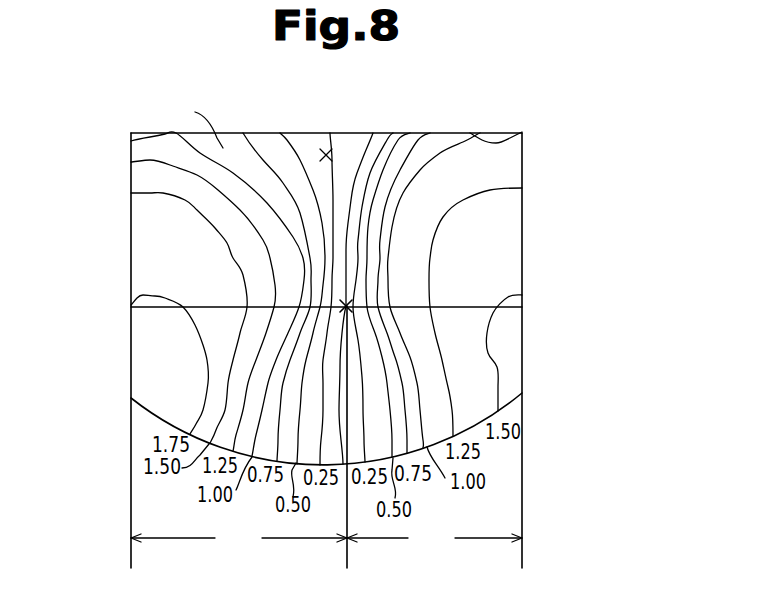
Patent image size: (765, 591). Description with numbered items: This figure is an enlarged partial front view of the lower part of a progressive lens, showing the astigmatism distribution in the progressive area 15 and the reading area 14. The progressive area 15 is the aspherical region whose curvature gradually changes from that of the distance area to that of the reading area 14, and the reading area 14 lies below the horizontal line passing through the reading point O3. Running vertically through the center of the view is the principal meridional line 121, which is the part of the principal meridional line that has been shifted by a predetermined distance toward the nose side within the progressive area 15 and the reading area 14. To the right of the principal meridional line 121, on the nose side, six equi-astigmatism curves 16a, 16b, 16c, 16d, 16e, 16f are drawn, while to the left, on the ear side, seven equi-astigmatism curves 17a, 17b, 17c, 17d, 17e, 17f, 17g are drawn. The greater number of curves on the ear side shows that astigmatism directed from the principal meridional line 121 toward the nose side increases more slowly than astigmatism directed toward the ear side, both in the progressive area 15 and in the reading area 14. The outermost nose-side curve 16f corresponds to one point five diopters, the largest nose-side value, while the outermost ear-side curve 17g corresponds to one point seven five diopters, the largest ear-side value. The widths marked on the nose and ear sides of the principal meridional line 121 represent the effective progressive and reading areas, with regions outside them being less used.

The reading area 14 is at (553, 364).
The progressive area 15 is at (553, 229).
The equi-astigmatism curve 16a is at (360, 148).
The equi-astigmatism curve 16b is at (391, 145).
The equi-astigmatism curve 16c is at (430, 150).
The equi-astigmatism curve 16d is at (520, 133).
The equi-astigmatism curve 16e is at (522, 191).
The equi-astigmatism curve 16f is at (522, 296).
The equi-astigmatism curve 17a is at (294, 146).
The equi-astigmatism curve 17b is at (263, 148).
The equi-astigmatism curve 17c is at (183, 120).
The equi-astigmatism curve 17d is at (131, 142).
The equi-astigmatism curve 17e is at (150, 161).
The equi-astigmatism curve 17f is at (162, 194).
The equi-astigmatism curve 17g is at (131, 301).
The principal meridional line 121 is at (328, 173).
The reading point O3 is at (347, 306).